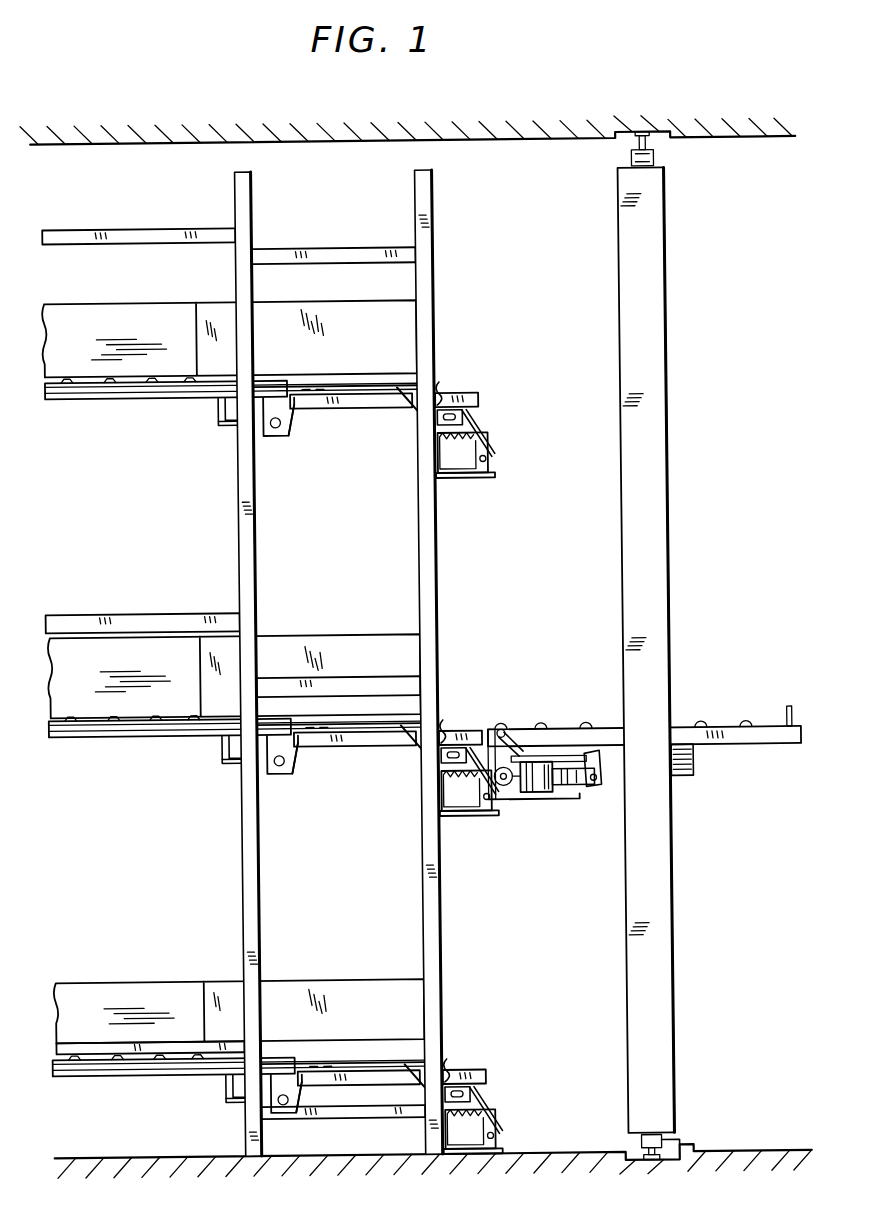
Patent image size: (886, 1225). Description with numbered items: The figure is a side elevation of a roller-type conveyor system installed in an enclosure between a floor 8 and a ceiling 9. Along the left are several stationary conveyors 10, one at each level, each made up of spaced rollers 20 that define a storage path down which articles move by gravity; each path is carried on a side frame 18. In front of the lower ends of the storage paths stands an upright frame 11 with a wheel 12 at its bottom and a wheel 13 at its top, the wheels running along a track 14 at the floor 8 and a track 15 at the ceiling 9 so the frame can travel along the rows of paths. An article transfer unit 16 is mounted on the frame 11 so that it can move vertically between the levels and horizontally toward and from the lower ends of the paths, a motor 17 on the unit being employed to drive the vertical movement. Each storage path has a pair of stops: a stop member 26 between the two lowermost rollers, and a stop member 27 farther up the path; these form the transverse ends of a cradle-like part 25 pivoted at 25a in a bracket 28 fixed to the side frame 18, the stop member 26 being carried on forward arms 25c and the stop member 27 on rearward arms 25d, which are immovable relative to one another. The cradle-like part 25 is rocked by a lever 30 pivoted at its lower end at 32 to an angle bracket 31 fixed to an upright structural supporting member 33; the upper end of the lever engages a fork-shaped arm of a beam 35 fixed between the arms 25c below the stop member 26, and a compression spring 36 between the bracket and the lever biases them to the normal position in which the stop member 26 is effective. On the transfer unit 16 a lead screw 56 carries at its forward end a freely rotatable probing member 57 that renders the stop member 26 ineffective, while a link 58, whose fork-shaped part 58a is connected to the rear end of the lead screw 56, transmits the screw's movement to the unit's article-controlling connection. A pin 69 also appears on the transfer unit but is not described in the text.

The floor 8 is at (757, 1160).
The ceiling 9 is at (770, 130).
The stationary conveyor 10 is at (124, 397).
The upright frame 11 is at (670, 446).
The wheel 12 is at (662, 1144).
The wheel 13 is at (636, 160).
The track 14 is at (637, 1144).
The track 15 is at (654, 144).
The article transfer unit 16 is at (733, 730).
The motor 17 is at (693, 770).
The side frame 18 is at (374, 394).
The roller 20 is at (456, 393).
The cradle-like part 25 is at (356, 396).
The pivot 25a is at (272, 428).
The arm 25c is at (430, 1092).
The arm 25d is at (222, 430).
The stop member 26 is at (441, 383).
The stop member 27 is at (221, 422).
The bracket 28 is at (294, 440).
The lever 30 is at (482, 438).
The angle bracket 31 is at (490, 461).
The pivot 32 is at (467, 479).
The upright structural supporting member 33 is at (440, 880).
The beam 35 is at (440, 421).
The compression spring 36 is at (441, 466).
The lead screw 56 is at (560, 789).
The probing member 57 is at (560, 802).
The link 58 is at (565, 745).
The fork-shaped part 58a is at (597, 758).
The stop pin 69 is at (786, 720).